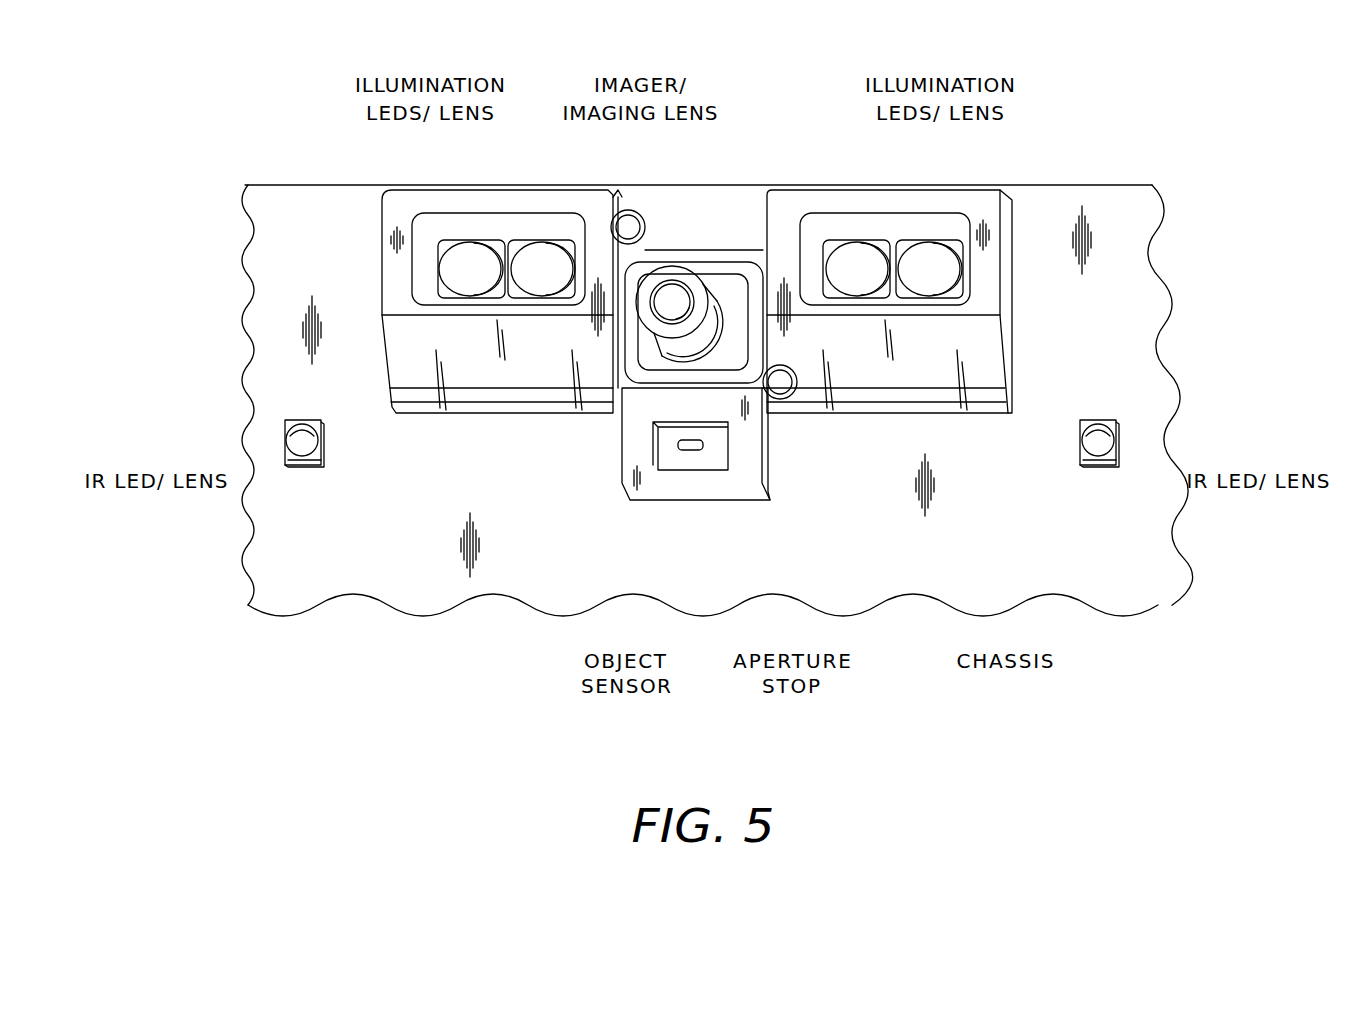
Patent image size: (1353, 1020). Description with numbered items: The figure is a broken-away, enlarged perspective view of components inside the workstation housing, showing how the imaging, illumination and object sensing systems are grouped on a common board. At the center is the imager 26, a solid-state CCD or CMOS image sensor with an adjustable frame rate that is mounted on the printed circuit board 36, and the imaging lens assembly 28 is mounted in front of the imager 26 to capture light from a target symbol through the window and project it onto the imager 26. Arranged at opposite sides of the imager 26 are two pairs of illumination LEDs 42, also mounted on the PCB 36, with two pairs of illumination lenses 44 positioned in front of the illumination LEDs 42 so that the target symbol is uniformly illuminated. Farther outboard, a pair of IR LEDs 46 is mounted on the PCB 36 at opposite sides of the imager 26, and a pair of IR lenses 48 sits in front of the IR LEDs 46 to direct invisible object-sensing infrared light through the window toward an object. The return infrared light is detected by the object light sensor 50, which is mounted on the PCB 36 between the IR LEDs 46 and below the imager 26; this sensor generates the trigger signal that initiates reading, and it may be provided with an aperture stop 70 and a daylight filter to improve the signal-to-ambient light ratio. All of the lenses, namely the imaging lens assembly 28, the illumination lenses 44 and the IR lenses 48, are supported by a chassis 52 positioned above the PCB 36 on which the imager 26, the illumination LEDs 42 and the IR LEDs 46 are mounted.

The imager 26 is at (703, 263).
The imaging lens assembly 28 is at (668, 273).
The printed circuit board 36 is at (265, 389).
The illumination light emitting diodes 42 is at (697, 270).
The illumination lenses 44 is at (942, 158).
The infrared light emitting diodes 46 is at (701, 443).
The IR lenses 48 is at (285, 441).
The object light sensor 50 is at (690, 450).
The chassis 52 is at (952, 413).
The aperture stop 70 is at (728, 447).